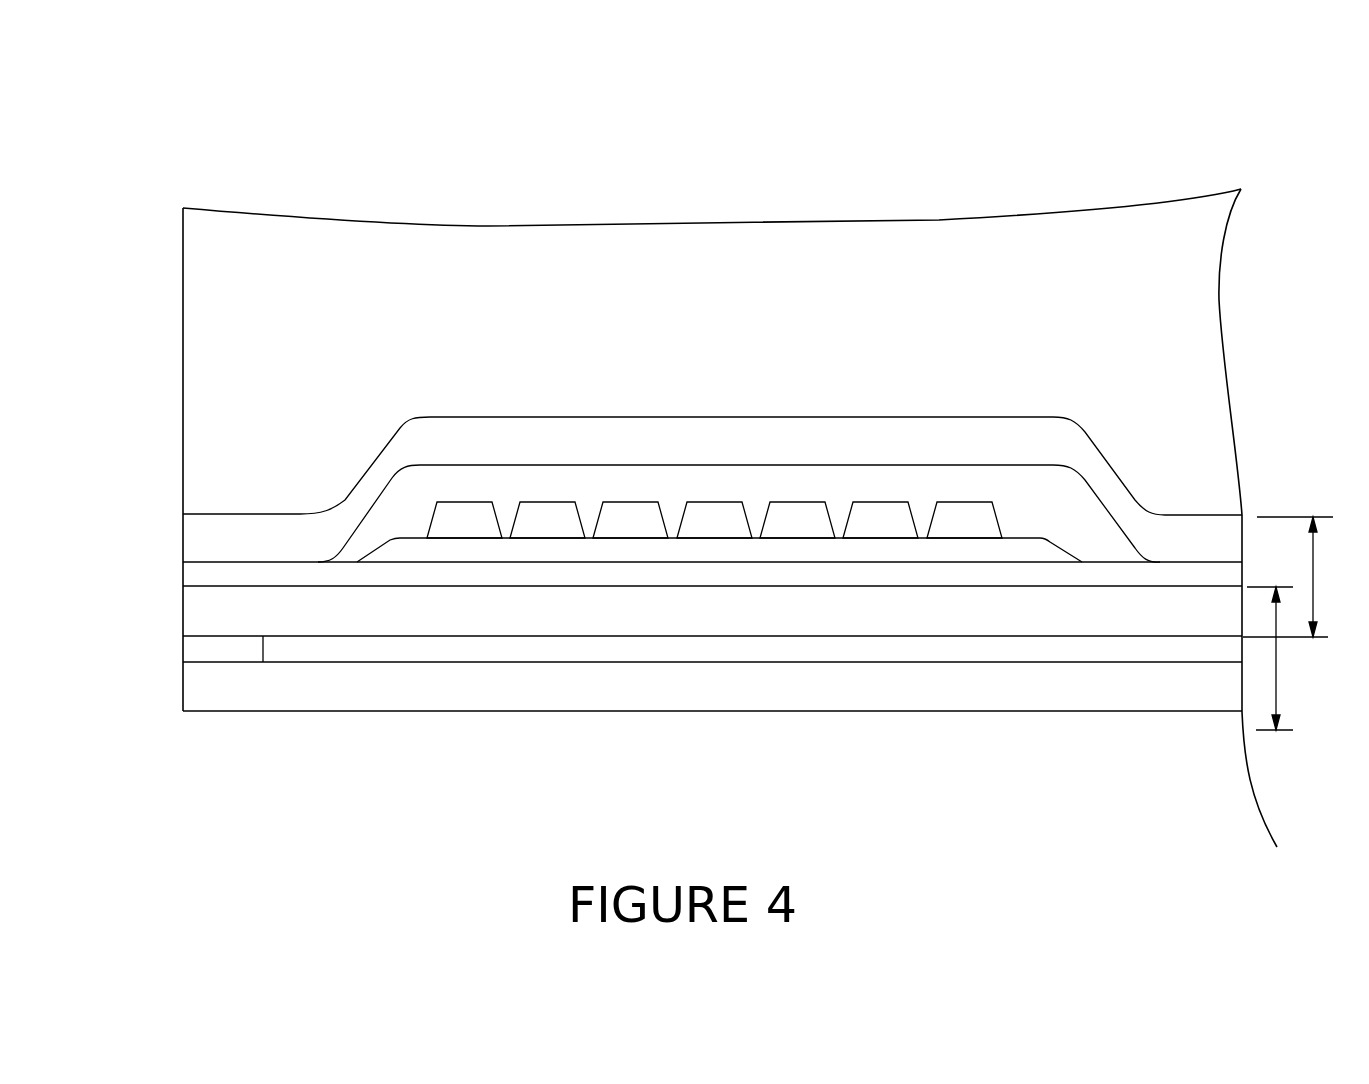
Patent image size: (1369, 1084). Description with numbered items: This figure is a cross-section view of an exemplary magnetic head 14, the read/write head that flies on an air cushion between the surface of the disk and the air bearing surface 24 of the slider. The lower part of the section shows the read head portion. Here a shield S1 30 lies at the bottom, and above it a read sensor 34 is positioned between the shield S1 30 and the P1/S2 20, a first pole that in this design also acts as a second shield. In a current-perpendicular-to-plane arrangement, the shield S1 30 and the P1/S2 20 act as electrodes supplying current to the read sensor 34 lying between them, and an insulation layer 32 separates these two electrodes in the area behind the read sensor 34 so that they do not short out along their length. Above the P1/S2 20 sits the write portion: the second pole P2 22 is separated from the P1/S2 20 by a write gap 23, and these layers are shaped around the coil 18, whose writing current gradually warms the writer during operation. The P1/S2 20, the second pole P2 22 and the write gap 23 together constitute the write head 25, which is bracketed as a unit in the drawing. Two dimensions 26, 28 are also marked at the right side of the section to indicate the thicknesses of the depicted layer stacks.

The magnetic head 14 is at (135, 239).
The coil 18 is at (535, 516).
The P1/S2 20 is at (515, 432).
The second pole P2 22 is at (268, 553).
The write gap 23 is at (182, 578).
The air bearing surface 24 is at (170, 319).
The write head 25 is at (183, 509).
The thickness dimension 26 is at (1313, 595).
The thickness dimension 28 is at (1278, 691).
The shield S1 30 is at (197, 674).
The insulation layer 32 is at (402, 650).
The read sensor 34 is at (193, 651).